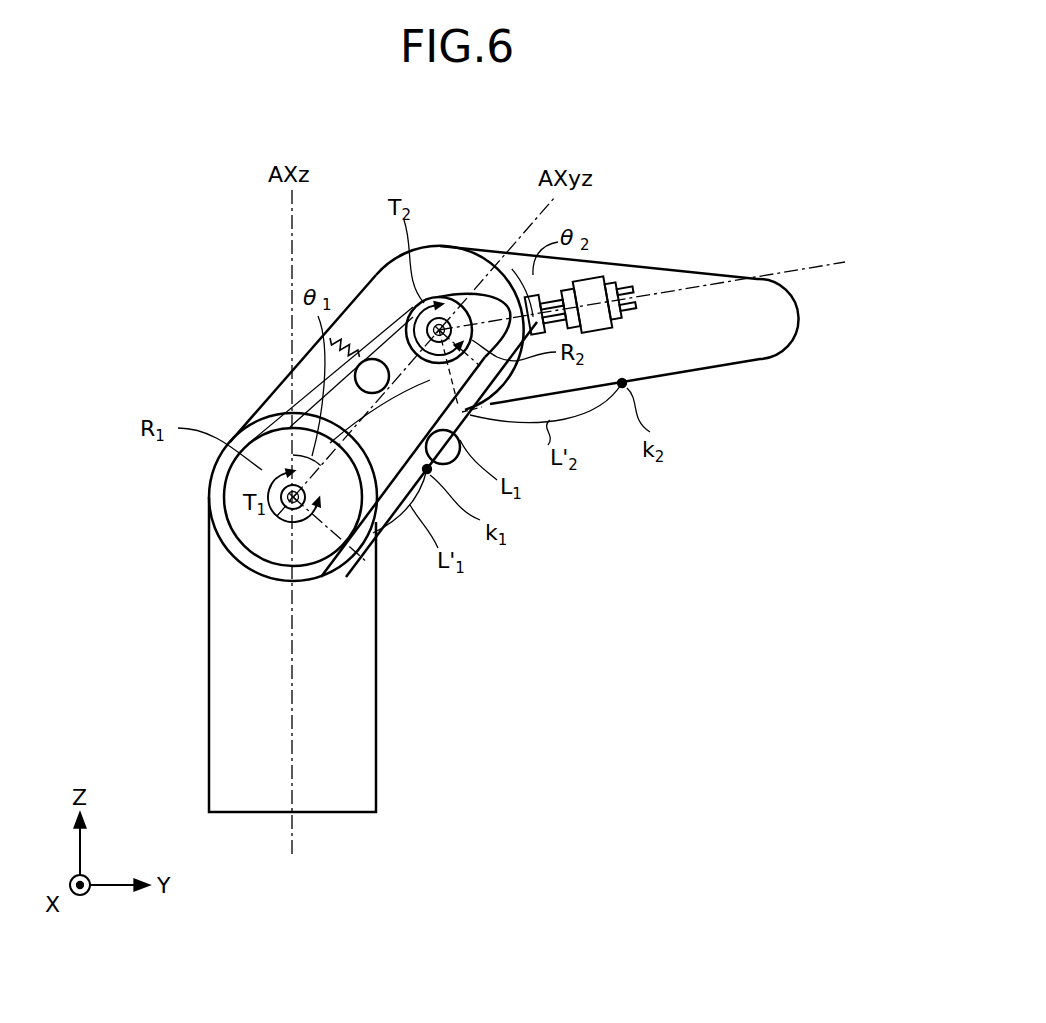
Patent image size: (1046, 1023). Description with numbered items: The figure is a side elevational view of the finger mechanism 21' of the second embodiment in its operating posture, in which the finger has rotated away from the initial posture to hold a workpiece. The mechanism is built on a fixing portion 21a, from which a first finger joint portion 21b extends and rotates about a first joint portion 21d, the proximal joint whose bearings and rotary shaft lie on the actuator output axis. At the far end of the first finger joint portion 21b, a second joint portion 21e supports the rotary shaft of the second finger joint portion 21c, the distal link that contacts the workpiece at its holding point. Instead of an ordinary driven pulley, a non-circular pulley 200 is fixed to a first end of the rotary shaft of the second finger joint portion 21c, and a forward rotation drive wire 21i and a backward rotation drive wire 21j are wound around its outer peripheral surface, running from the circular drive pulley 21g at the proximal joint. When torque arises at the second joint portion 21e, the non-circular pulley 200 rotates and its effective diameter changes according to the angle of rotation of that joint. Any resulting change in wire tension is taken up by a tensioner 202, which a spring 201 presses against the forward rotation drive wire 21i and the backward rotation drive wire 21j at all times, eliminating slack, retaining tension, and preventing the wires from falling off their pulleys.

The finger mechanism 21' is at (131, 149).
The fixing portion 21a is at (209, 604).
The first finger joint portion 21b is at (268, 432).
The second finger joint portion 21c is at (735, 362).
The first joint portion 21d is at (270, 478).
The second joint portion 21e is at (441, 300).
The drive pulley 21g is at (217, 489).
The forward rotation drive wire 21i is at (470, 400).
The backward rotation drive wire 21j is at (300, 440).
The non-circular pulley 200 is at (522, 305).
The spring 201 is at (342, 340).
The tensioner 202 is at (372, 358).